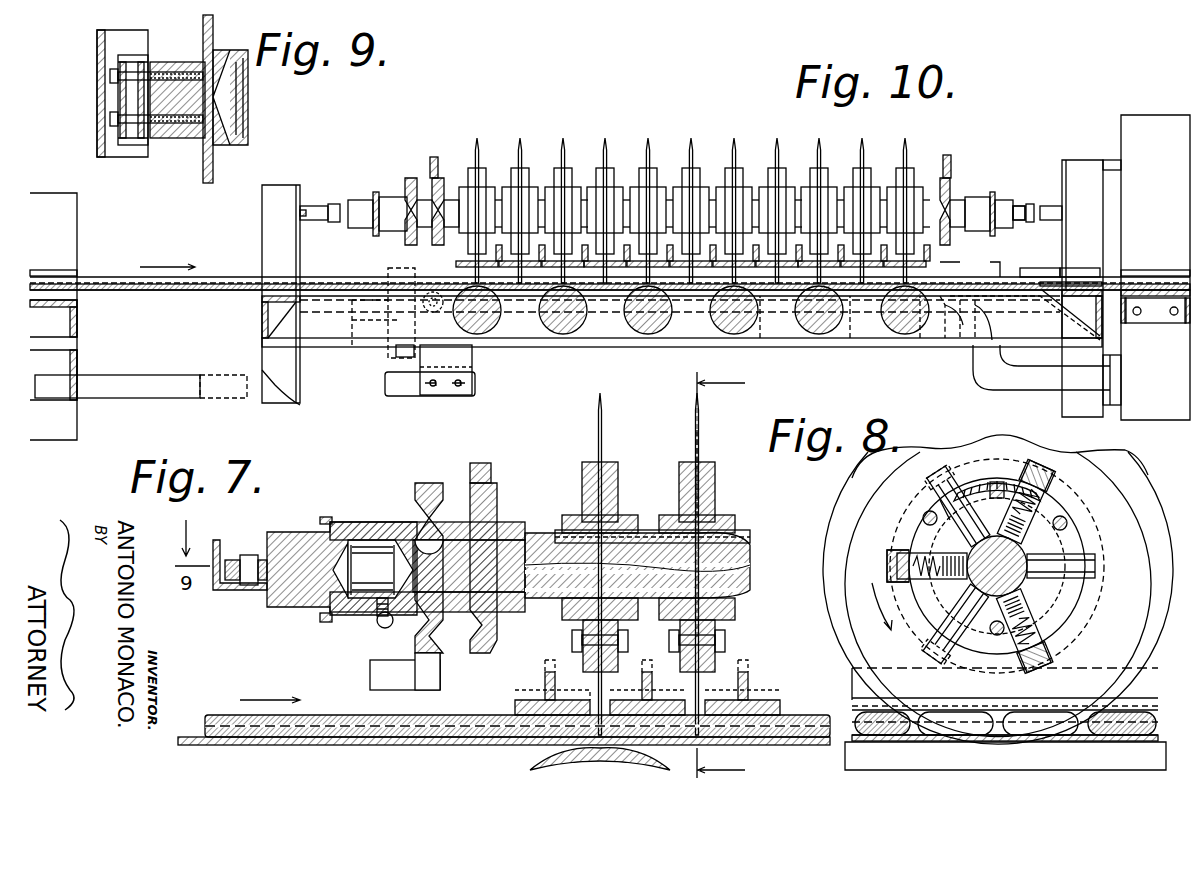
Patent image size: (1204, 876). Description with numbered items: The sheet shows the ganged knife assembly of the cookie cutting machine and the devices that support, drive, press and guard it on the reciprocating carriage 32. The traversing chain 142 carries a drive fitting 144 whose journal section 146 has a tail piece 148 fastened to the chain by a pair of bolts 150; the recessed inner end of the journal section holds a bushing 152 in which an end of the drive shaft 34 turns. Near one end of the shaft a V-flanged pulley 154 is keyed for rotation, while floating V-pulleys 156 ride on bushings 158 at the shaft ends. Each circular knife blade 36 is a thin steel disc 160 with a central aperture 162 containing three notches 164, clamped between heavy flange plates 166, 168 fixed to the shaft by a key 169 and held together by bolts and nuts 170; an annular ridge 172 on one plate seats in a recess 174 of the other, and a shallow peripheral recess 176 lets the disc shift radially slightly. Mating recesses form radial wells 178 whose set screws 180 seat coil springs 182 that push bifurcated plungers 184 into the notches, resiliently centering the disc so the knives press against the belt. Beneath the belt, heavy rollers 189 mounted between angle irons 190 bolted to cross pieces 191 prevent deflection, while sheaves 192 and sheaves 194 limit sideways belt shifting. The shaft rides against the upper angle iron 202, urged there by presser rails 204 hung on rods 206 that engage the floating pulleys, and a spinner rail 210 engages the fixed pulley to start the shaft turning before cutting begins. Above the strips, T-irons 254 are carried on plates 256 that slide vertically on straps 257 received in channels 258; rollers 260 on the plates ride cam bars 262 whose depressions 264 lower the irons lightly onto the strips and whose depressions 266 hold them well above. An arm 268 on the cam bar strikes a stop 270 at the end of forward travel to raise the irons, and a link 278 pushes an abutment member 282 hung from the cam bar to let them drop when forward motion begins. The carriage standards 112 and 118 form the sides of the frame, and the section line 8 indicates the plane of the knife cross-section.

In FIG. 7, the section line 8— 8 is at (728, 576).
In FIG. 10, the carriage 32 is at (248, 232).
In FIG. 10, the drive shaft 34 is at (728, 210).
In FIG. 7, the drive shaft 34 is at (525, 540).
In FIG. 8, the drive shaft 34 is at (970, 580).
In FIG. 7, the circular knife blades 36 is at (628, 428).
In FIG. 10, the standards 112 is at (275, 302).
In FIG. 10, the carriage standards 118 is at (1078, 155).
In FIG. 9, the traversing chain 142 is at (122, 62).
In FIG. 10, the traversing chain 142 is at (1020, 206).
In FIG. 9, the drive fitting 144 is at (176, 138).
In FIG. 7, the drive fitting 144 is at (294, 626).
In FIG. 7, the journal section 146 is at (355, 522).
In FIG. 9, the tail piece 148 is at (178, 62).
In FIG. 7, the tail piece 148 is at (285, 532).
In FIG. 9, the bolts 150 is at (110, 77).
In FIG. 7, the bolts 150 is at (390, 540).
In FIG. 7, the bushings 152 is at (375, 615).
In FIG. 10, the V-flanged pulley 154 is at (408, 190).
In FIG. 7, the V-flanged pulley 154 is at (443, 483).
In FIG. 10, the V-pulleys 156 is at (435, 190).
In FIG. 7, the V-pulleys 156 is at (497, 510).
In FIG. 7, the bushings 158 is at (500, 612).
In FIG. 7, the steel disc 160 is at (698, 432).
In FIG. 8, the steel disc 160 is at (1130, 505).
In FIG. 8, the central aperture 162 is at (1075, 530).
In FIG. 8, the notches 164 is at (1030, 655).
In FIG. 7, the flange plate 166 is at (705, 477).
In FIG. 7, the flange plate 168 is at (690, 510).
In FIG. 7, the key 169 is at (750, 530).
In FIG. 8, the key 169 is at (940, 500).
In FIG. 7, the bolts and nuts 170 is at (728, 640).
In FIG. 8, the bolts and nuts 170 is at (990, 648).
In FIG. 7, the annular ridge 172 is at (700, 515).
In FIG. 7, the recess 174 is at (668, 515).
In FIG. 7, the shallow recess 176 is at (588, 462).
In FIG. 8, the radial wells 178 is at (1060, 620).
In FIG. 8, the set screws 180 is at (1085, 598).
In FIG. 8, the coil springs 182 is at (1035, 480).
In FIG. 8, the plungers 184 is at (1045, 470).
In FIG. 10, the rollers 189 is at (556, 334).
In FIG. 10, the angle irons 190 is at (325, 330).
In FIG. 10, the cross pieces 191 is at (300, 405).
In FIG. 10, the sheaves 192 is at (1088, 268).
In FIG. 10, the sheaves 194 is at (62, 277).
In FIG. 10, the angle iron 202 is at (333, 204).
In FIG. 10, the presser rails 204 is at (436, 157).
In FIG. 7, the presser rails 204 is at (480, 463).
In FIG. 10, the rods 206 is at (372, 226).
In FIG. 7, the spinner rail 210 is at (440, 665).
In FIG. 10, the T-irons 254 is at (940, 262).
In FIG. 7, the T-irons 254 is at (545, 660).
In FIG. 10, the plates 256 is at (980, 262).
In FIG. 10, the straps 257 is at (396, 352).
In FIG. 10, the channels 258 is at (403, 268).
In FIG. 10, the rollers 260 is at (985, 305).
In FIG. 10, the cam bars 262 is at (780, 320).
In FIG. 10, the depressions 264 is at (870, 338).
In FIG. 10, the depressions 266 is at (940, 338).
In FIG. 10, the arm 268 is at (1005, 390).
In FIG. 10, the stop 270 is at (1117, 372).
In FIG. 10, the link 278 is at (147, 375).
In FIG. 10, the abutment member 282 is at (405, 396).